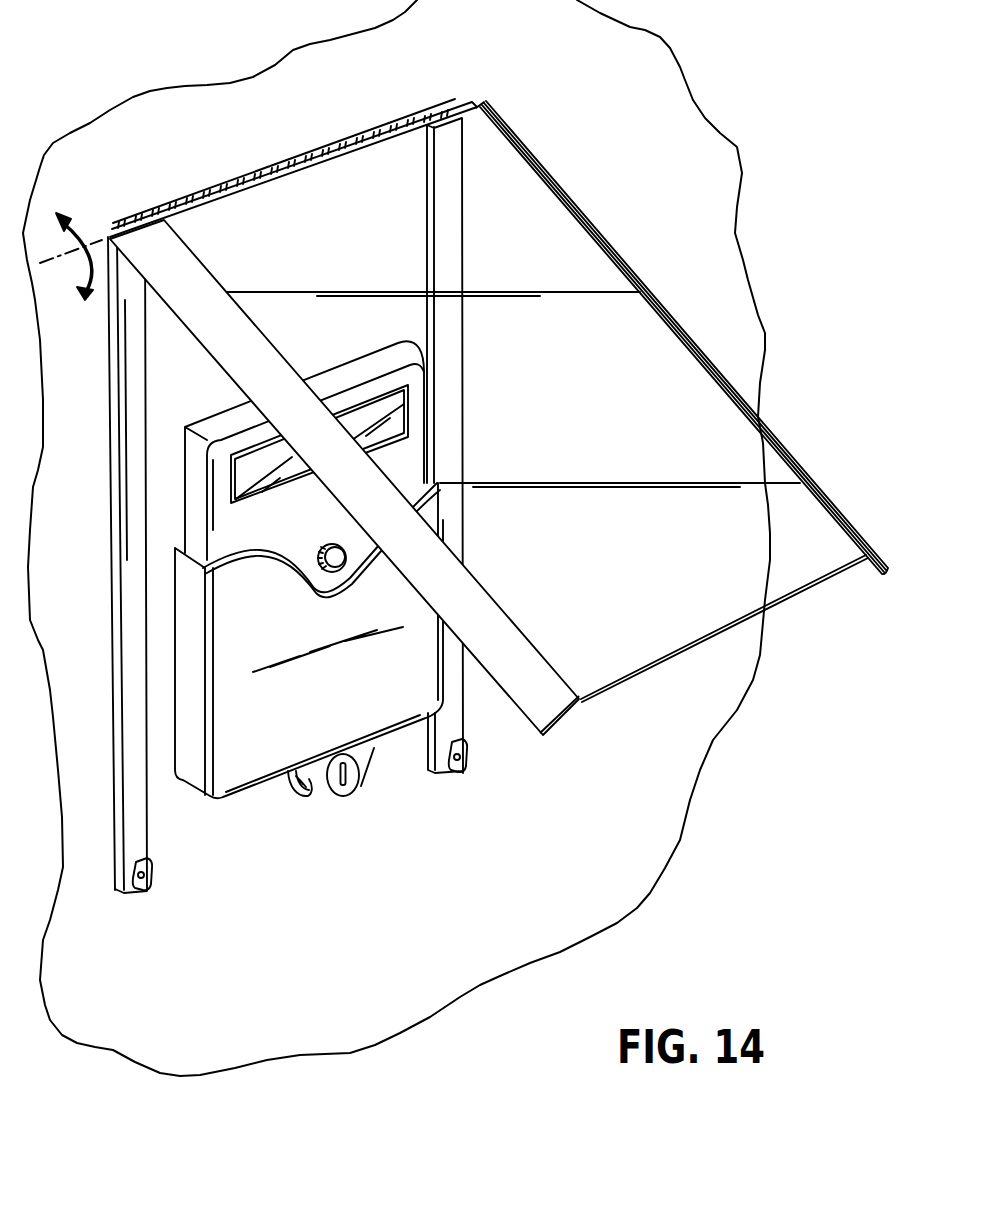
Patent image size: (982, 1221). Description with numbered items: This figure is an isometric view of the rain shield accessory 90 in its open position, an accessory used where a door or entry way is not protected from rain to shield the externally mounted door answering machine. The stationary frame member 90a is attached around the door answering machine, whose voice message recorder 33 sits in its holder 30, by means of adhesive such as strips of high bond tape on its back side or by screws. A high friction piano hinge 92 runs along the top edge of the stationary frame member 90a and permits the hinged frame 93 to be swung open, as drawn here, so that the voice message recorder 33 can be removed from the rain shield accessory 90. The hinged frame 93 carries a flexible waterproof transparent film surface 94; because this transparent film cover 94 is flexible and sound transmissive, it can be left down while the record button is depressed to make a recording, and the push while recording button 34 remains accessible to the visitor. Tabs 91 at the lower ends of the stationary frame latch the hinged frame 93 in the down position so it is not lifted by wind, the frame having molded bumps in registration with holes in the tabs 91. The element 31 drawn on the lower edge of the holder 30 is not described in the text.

The holder 30 is at (233, 763).
The lock eyelet 31 is at (350, 778).
The voice message recorder 33 is at (243, 530).
The push while recording button 34 is at (322, 550).
The rain shield accessory 90 is at (144, 206).
The stationary frame member 90a is at (132, 780).
The tabs 91 is at (150, 893).
The high friction piano hinge 92 is at (242, 182).
The hinged frame 93 is at (583, 221).
The flexible waterproof transparent film surface 94 is at (637, 647).